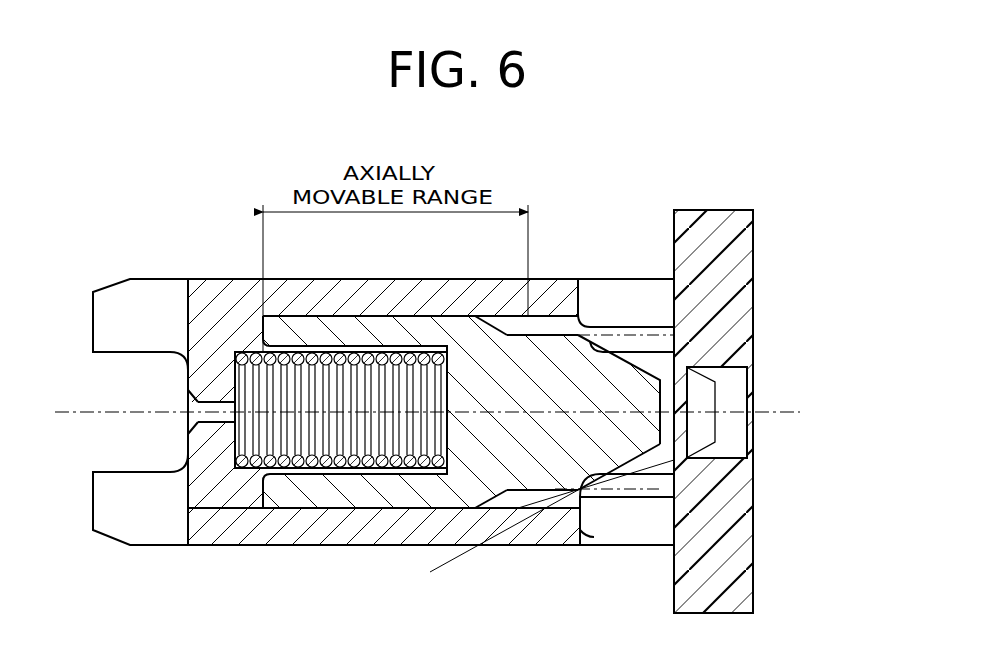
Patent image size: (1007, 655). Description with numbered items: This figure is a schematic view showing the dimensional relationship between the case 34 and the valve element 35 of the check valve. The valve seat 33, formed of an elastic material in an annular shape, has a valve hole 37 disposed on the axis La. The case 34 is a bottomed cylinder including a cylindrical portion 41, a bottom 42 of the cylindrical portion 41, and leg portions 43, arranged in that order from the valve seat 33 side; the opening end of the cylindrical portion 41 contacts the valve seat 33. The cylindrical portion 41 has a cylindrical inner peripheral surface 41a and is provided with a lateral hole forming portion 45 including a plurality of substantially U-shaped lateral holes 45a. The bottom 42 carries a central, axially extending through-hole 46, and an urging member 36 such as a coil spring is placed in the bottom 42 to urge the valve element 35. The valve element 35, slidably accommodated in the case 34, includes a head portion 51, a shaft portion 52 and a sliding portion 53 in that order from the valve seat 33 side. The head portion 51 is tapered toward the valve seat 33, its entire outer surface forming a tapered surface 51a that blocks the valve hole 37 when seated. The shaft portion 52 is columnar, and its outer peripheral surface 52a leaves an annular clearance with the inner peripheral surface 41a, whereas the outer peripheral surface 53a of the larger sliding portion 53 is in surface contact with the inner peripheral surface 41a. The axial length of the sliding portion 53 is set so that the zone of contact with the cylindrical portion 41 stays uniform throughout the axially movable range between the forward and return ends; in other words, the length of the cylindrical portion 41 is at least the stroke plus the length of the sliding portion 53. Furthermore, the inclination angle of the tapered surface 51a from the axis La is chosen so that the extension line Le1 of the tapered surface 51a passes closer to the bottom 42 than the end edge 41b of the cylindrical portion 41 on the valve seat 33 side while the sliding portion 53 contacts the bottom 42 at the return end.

The valve seat 33 is at (753, 258).
The case 34 is at (196, 269).
The valve element 35 is at (404, 306).
The urging member 36 is at (330, 355).
The valve hole 37 is at (747, 375).
The cylindrical portion 41 is at (378, 540).
The inner peripheral surface of the cylindrical portion 41a is at (500, 511).
The end edge of the cylindrical portion 41b is at (592, 546).
The bottom 42 is at (217, 535).
The leg portions 43 is at (117, 290).
The lateral hole forming portion 45 is at (613, 326).
The lateral holes 45a is at (660, 546).
The through-hole 46 is at (190, 421).
The head portion 51 is at (650, 345).
The tapered surface 51a is at (655, 456).
The shaft portion 52 is at (523, 347).
The outer peripheral surface of the shaft portion 52a is at (527, 489).
The sliding portion 53 is at (455, 313).
The outer peripheral surface of the sliding portion 53a is at (455, 509).
The axis La is at (808, 410).
The extension line Le1 is at (436, 576).